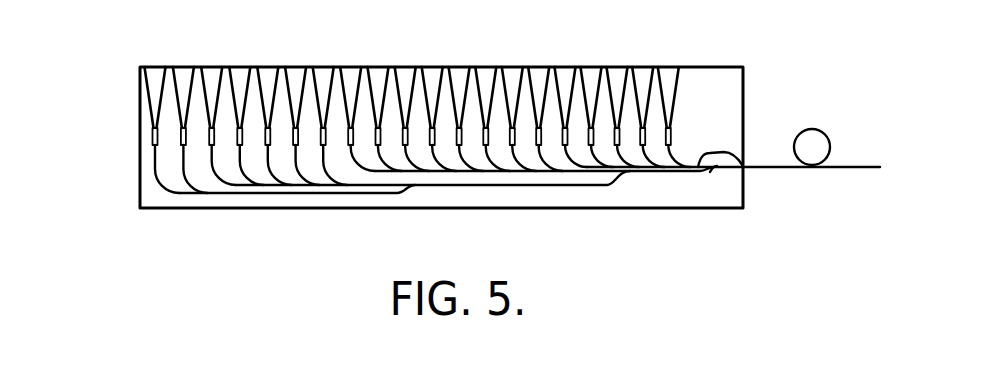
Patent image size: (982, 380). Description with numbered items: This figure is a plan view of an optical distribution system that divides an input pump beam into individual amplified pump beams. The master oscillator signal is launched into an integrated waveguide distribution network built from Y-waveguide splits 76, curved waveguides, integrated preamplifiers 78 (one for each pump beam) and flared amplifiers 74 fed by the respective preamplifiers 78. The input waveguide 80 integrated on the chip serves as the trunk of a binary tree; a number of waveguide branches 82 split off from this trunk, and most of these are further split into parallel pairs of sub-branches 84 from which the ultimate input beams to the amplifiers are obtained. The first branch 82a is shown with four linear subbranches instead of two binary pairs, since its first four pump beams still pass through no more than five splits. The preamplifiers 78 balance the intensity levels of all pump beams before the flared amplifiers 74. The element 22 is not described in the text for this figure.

The flared amplifier 74 is at (148, 89).
The integrated preamplifier 78 is at (151, 137).
The sub-branch 84 is at (177, 173).
The Y-waveguide split 76 is at (282, 194).
The waveguide branch 82 is at (591, 187).
The first branch 82a is at (743, 168).
The input waveguide 80 is at (729, 172).
The fiber cable 22 is at (794, 168).